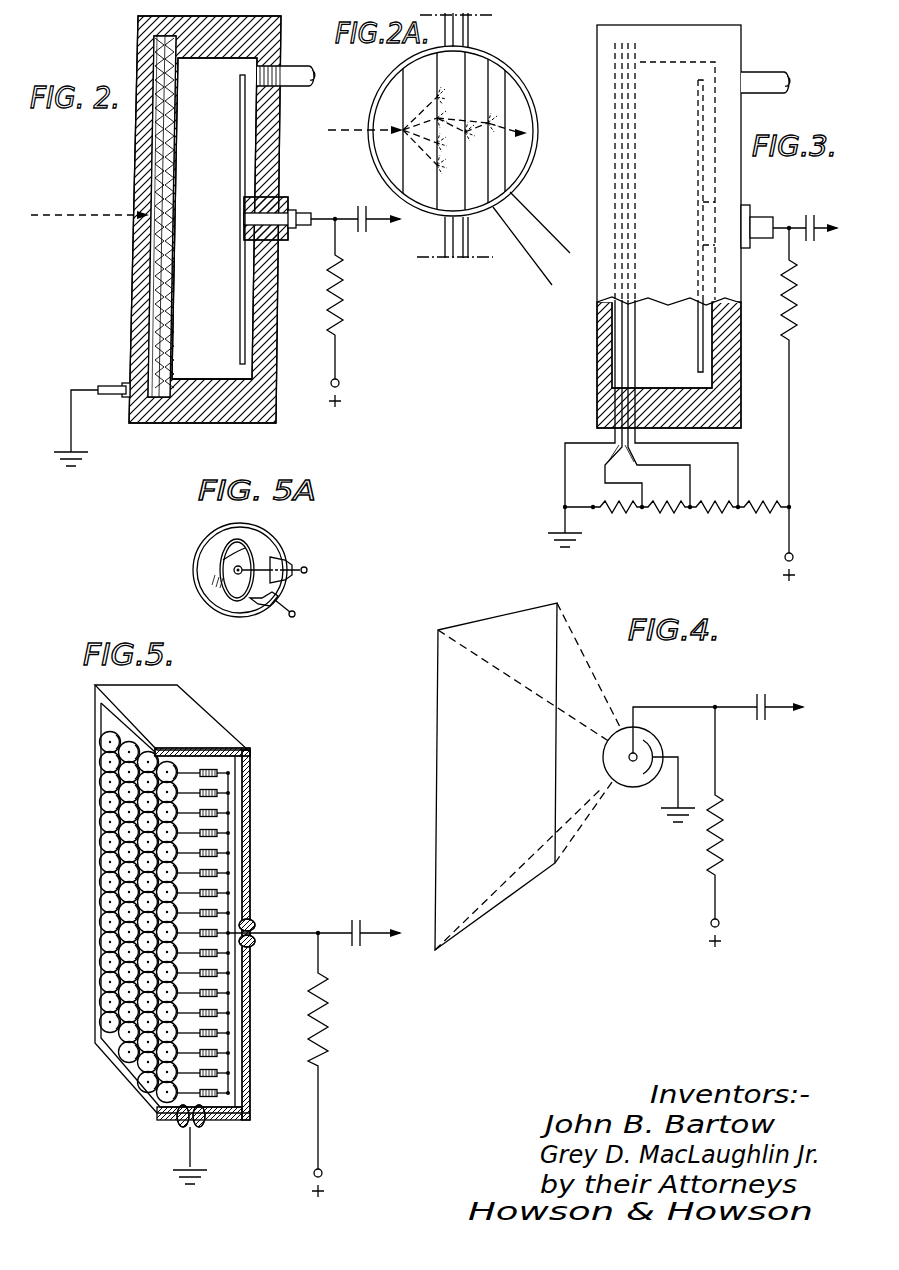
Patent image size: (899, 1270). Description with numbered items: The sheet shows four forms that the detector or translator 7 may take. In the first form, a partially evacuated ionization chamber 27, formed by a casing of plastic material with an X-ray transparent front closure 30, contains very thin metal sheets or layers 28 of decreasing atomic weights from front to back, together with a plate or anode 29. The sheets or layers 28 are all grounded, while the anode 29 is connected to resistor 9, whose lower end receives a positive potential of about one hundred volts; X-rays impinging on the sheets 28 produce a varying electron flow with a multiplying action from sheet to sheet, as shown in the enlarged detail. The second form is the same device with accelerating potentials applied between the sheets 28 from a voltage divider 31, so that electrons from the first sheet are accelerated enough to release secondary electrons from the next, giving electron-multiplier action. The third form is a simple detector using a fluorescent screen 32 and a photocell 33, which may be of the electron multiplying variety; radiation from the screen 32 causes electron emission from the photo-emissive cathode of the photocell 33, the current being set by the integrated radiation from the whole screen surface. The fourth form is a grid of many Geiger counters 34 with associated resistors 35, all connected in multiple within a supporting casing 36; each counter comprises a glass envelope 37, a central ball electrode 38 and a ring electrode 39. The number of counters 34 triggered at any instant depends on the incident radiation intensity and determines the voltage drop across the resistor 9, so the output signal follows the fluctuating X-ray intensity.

In FIG. 2, the detector or translator 7 is at (262, 341).
In FIG. 2, the resistor 9 is at (345, 284).
In FIG. 3, the resistor 9 is at (799, 288).
In FIG. 4, the resistor 9 is at (725, 830).
In FIG. 5, the resistor 9 is at (330, 1000).
In FIG. 2, the ionization chamber 27 is at (189, 379).
In FIG. 2, the thin metal sheets or layers 28 is at (171, 99).
In FIG. 2A, the thin metal sheets or layers 28 is at (447, 237).
In FIG. 2, the plate or anode 29 is at (240, 266).
In FIG. 2, the X-ray transparent front closure 30 is at (144, 263).
In FIG. 3, the voltage divider 31 is at (750, 523).
In FIG. 4, the fluorescent screen 32 is at (437, 715).
In FIG. 4, the photocell 33 is at (627, 780).
In FIG. 5A, the Geiger counters 34 is at (247, 610).
In FIG. 5, the Geiger counters 34 is at (127, 772).
In FIG. 5, the resistors 35 is at (215, 872).
In FIG. 5, the supporting casing 36 is at (208, 730).
In FIG. 5A, the glass envelope 37 is at (270, 548).
In FIG. 5A, the central ball electrode 38 is at (236, 570).
In FIG. 5A, the ring electrode 39 is at (223, 544).